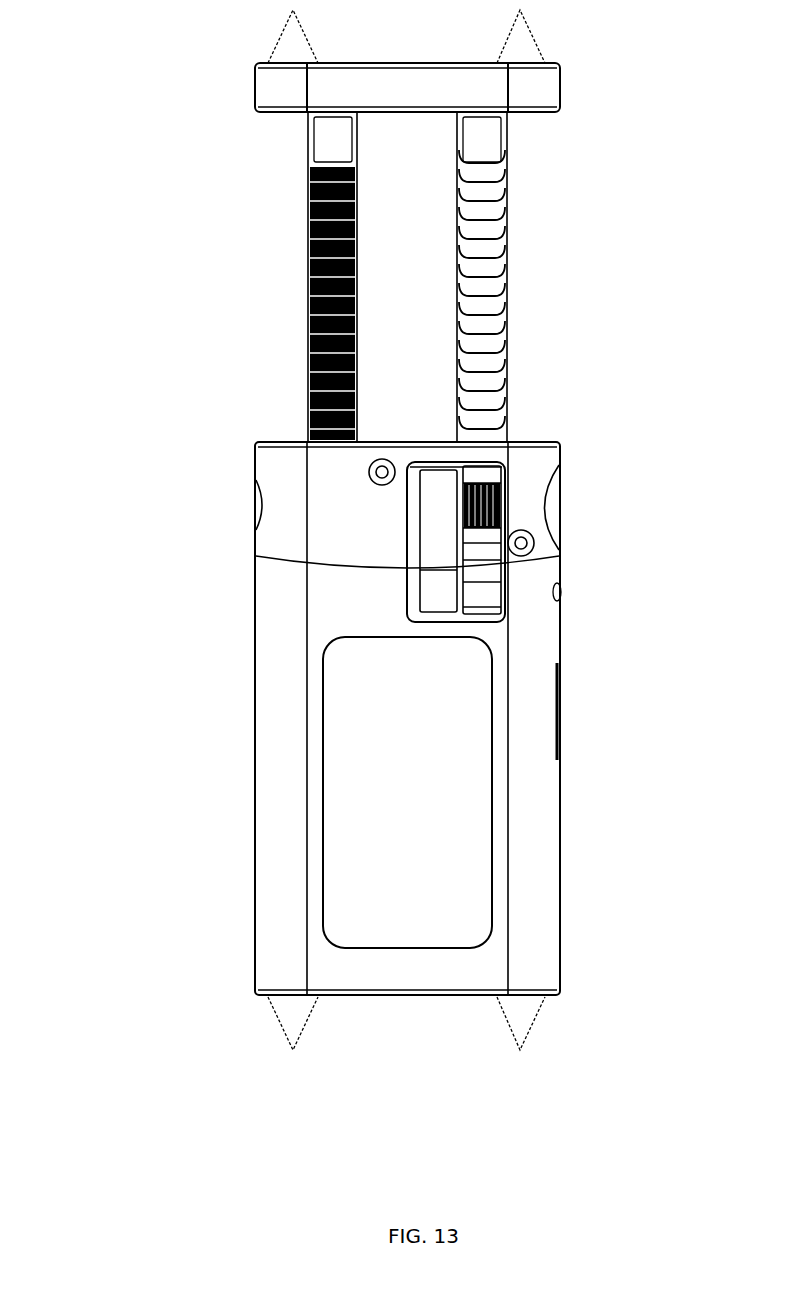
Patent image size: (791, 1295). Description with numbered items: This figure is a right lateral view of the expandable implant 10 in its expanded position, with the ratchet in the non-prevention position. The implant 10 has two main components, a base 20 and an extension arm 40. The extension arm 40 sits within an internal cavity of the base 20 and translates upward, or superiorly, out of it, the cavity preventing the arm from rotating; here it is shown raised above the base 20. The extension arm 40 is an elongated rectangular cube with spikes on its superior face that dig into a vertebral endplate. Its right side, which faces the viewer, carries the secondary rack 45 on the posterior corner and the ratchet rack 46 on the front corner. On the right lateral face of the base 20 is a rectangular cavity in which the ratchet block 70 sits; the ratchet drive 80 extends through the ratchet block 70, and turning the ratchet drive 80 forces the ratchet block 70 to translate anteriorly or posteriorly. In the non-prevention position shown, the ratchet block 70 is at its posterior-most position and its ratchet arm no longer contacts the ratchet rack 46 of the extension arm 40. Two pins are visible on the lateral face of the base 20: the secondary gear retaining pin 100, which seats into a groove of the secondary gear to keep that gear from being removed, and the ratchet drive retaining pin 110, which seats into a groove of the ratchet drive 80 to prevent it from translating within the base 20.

The expandable implant 10 is at (142, 85).
The base 20 is at (270, 999).
The extension arm 40 is at (292, 102).
The secondary rack 45 is at (310, 235).
The ratchet rack 46 is at (487, 224).
The ratchet block 70 is at (435, 537).
The ratchet drive 80 is at (510, 481).
The secondary gear retaining pin 100 is at (367, 468).
The ratchet drive retaining pin 110 is at (535, 544).